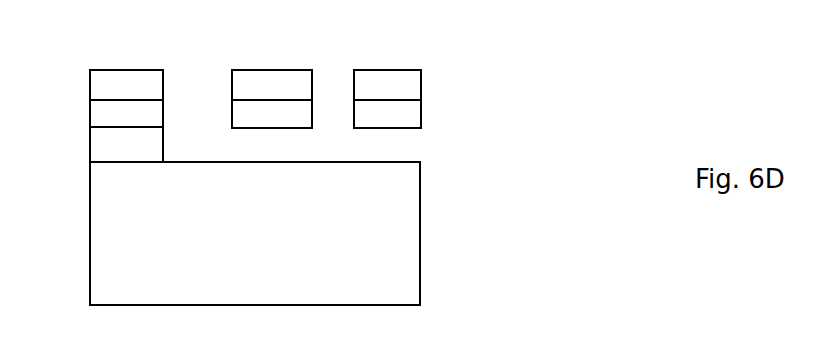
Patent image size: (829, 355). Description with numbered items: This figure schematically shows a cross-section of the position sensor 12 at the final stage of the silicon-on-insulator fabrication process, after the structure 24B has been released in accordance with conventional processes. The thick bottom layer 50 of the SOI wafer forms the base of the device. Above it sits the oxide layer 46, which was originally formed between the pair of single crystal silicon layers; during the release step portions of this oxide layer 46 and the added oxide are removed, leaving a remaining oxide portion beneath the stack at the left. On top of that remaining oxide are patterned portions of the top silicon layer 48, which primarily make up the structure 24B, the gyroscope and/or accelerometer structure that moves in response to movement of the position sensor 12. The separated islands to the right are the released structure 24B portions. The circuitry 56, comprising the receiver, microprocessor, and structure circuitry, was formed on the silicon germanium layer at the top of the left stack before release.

The position sensor 12 is at (520, 117).
The structure 24B is at (215, 80).
The oxide layer 46 is at (105, 146).
The top silicon layer 48 is at (90, 103).
The bottom layer 50 is at (407, 250).
The circuitry 56 is at (108, 60).